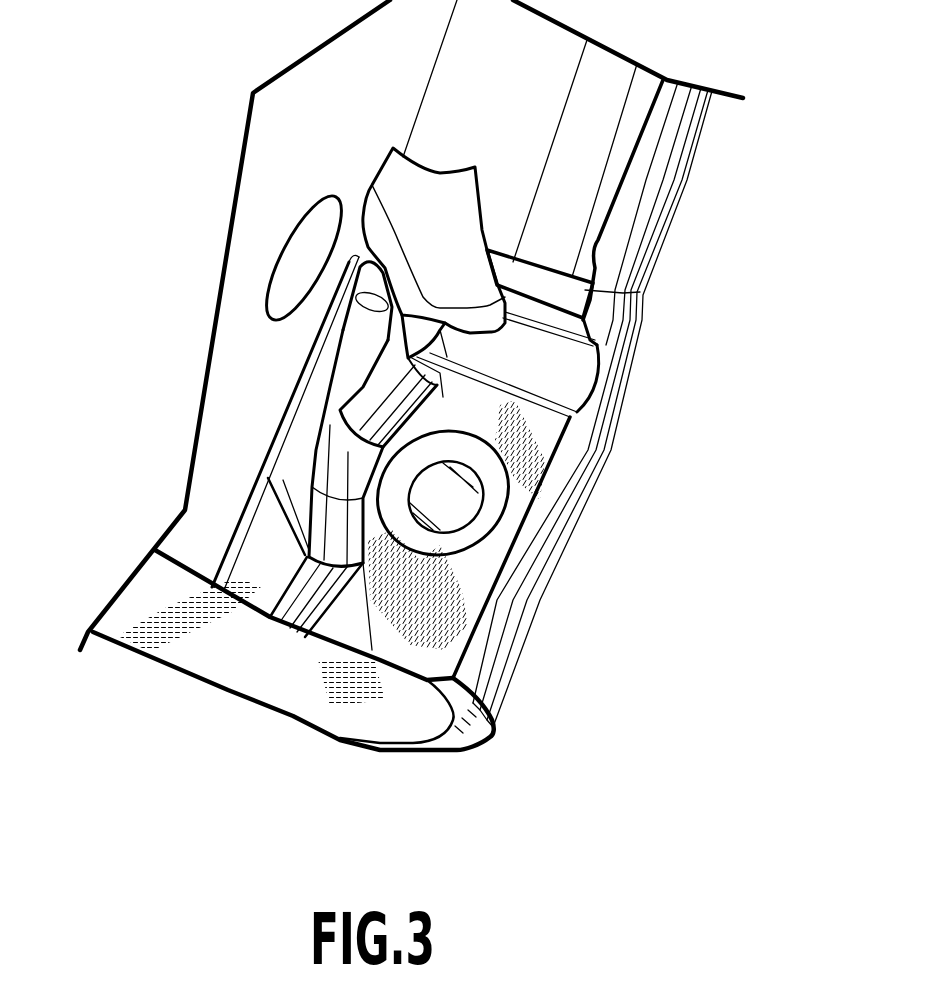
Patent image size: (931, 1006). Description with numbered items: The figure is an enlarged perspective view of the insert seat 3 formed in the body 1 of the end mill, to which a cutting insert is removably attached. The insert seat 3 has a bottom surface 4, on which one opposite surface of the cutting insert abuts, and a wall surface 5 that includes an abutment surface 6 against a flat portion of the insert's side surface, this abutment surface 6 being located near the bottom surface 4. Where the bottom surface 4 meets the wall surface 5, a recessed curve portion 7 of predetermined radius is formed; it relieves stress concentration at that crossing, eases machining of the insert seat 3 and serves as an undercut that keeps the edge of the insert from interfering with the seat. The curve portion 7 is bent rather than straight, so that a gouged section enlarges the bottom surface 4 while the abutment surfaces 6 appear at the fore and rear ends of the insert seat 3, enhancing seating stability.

The body 1 is at (577, 167).
The insert seat 3 is at (380, 637).
The bottom surface 4 is at (418, 632).
The wall surface 5 is at (388, 347).
The abutment surface 6 is at (268, 603).
The curve portion 7 is at (305, 617).